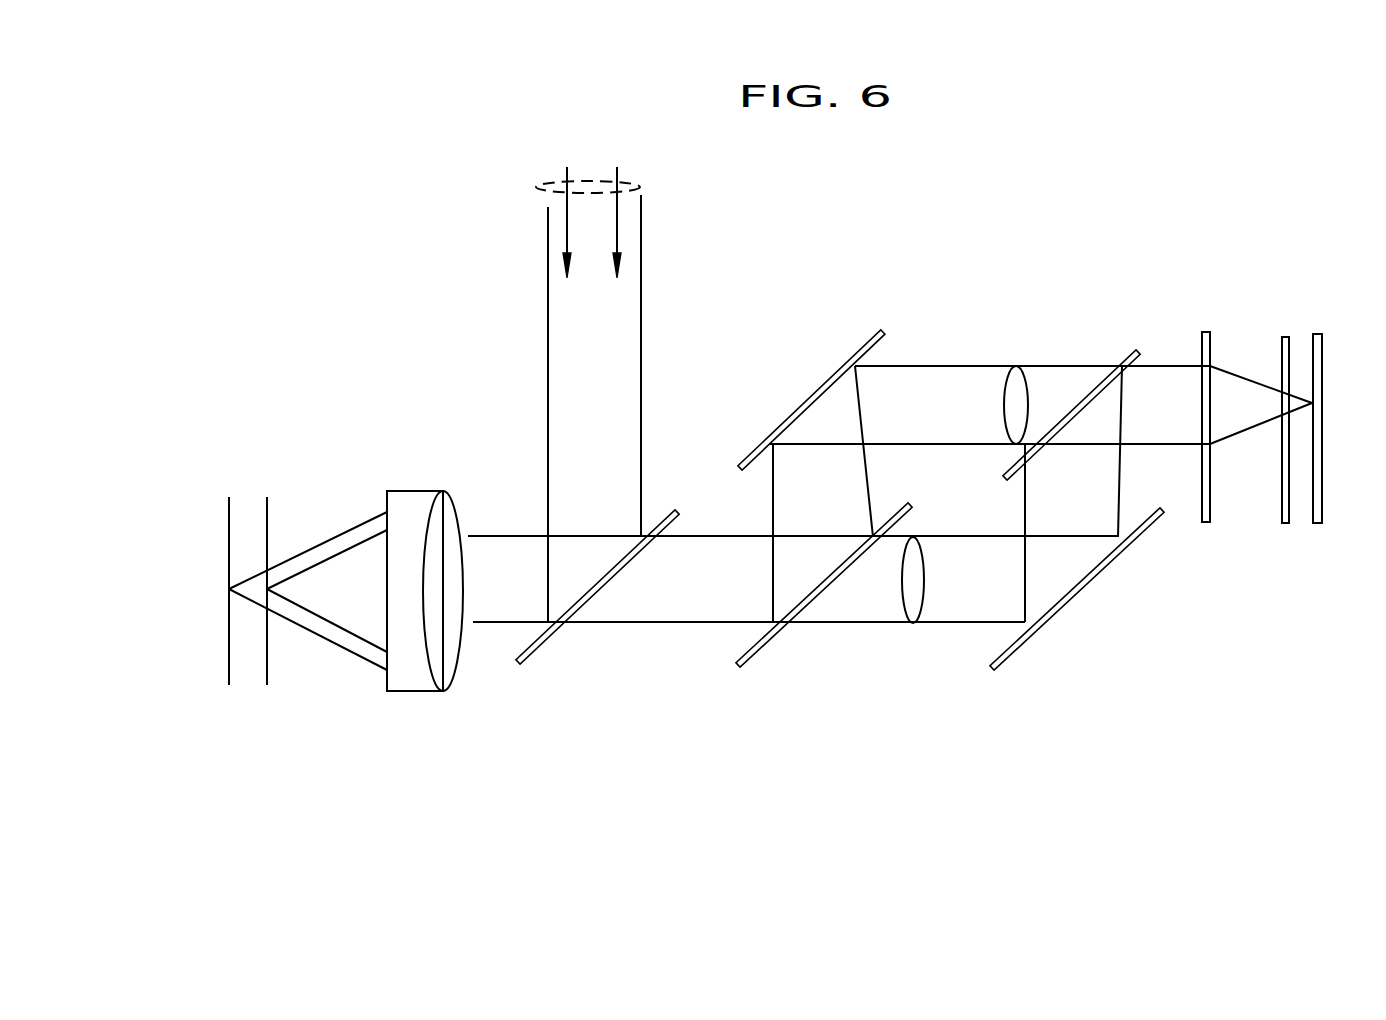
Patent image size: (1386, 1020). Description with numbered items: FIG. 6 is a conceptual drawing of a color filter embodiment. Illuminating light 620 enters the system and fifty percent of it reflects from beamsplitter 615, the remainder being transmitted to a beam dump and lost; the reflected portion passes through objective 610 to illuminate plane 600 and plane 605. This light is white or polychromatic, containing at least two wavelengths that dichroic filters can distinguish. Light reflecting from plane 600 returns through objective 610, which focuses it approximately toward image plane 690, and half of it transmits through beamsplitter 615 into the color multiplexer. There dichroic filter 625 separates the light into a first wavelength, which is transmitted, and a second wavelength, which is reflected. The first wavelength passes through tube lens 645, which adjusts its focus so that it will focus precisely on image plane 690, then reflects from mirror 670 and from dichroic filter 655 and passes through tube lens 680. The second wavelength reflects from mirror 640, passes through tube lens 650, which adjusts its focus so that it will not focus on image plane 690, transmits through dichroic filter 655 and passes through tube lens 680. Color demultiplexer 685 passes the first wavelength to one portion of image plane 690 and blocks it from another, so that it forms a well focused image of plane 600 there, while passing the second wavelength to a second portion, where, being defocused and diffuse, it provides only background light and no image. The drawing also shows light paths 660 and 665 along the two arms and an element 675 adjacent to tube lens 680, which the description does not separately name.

The plane 600 is at (229, 617).
The plane 605 is at (267, 647).
The objective 610 is at (408, 492).
The beamsplitter 615 is at (521, 665).
The illuminating light 620 is at (535, 186).
The dichroic filter 625 is at (742, 665).
The mirror 640 is at (838, 367).
The tube lens 645 is at (913, 624).
The tube lens 650 is at (1013, 367).
The dichroic filter 655 is at (1137, 352).
The lower light path 660 is at (965, 623).
The upper light path 665 is at (957, 366).
The mirror 670 is at (1003, 665).
The filter plate 675 is at (1152, 366).
The tube lens 680 is at (1206, 522).
The color demultiplexer 685 is at (1286, 336).
The image plane 690 is at (1317, 523).